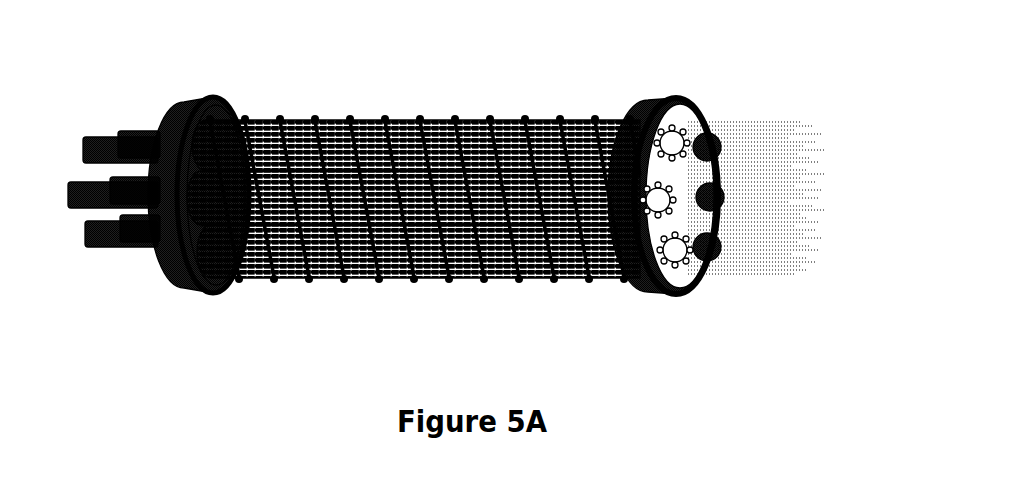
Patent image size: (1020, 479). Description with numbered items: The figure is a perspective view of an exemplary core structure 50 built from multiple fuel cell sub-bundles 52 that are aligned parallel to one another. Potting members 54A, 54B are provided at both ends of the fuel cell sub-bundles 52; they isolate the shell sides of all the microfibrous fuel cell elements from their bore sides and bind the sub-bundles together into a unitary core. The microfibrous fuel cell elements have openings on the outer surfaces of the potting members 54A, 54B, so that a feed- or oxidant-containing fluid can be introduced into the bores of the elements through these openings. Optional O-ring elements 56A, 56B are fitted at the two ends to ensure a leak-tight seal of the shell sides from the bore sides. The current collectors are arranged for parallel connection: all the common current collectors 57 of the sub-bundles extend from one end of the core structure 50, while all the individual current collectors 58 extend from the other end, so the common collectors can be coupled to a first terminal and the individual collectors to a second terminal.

The core structure 50 is at (446, 188).
The fuel cell sub-bundles 52 is at (427, 273).
The potting member 54A is at (238, 100).
The potting member 54B is at (692, 117).
The O-ring element 56A is at (215, 92).
The O-ring element 56B is at (678, 293).
The common current collectors 57 is at (120, 233).
The individual current collectors 58 is at (757, 222).